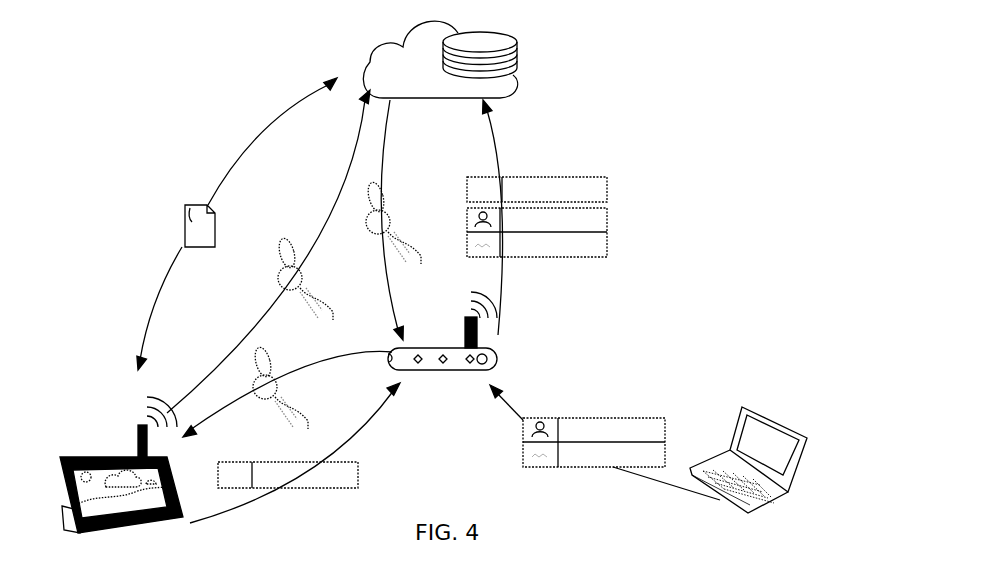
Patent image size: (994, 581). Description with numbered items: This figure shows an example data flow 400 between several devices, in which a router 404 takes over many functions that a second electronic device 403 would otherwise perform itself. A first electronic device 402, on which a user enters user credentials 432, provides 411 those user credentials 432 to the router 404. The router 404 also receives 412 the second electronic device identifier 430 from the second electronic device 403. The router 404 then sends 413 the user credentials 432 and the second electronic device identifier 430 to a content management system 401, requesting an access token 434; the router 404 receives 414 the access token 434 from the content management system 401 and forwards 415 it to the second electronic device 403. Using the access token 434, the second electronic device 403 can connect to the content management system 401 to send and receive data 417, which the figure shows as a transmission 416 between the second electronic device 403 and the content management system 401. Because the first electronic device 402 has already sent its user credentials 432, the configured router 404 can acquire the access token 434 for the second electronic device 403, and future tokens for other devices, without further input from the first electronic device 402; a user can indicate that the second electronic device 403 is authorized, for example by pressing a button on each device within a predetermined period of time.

The data flow 400 is at (702, 87).
The content management system 401 is at (518, 62).
The first electronic device 402 is at (762, 405).
The second electronic device 403 is at (83, 457).
The router 404 is at (500, 352).
The provide user credentials 411 is at (523, 410).
The receive second electronic device identifier 412 is at (347, 440).
The send user credentials and device identifier 413 is at (503, 150).
The receive access token 414 is at (243, 160).
The forward access token 415 is at (318, 353).
The transmission between frame and cloud 416 is at (240, 346).
The data 417 is at (188, 208).
The second electronic device identifier 430 is at (607, 188).
The user credentials 432 is at (607, 240).
The access token 434 is at (349, 307).